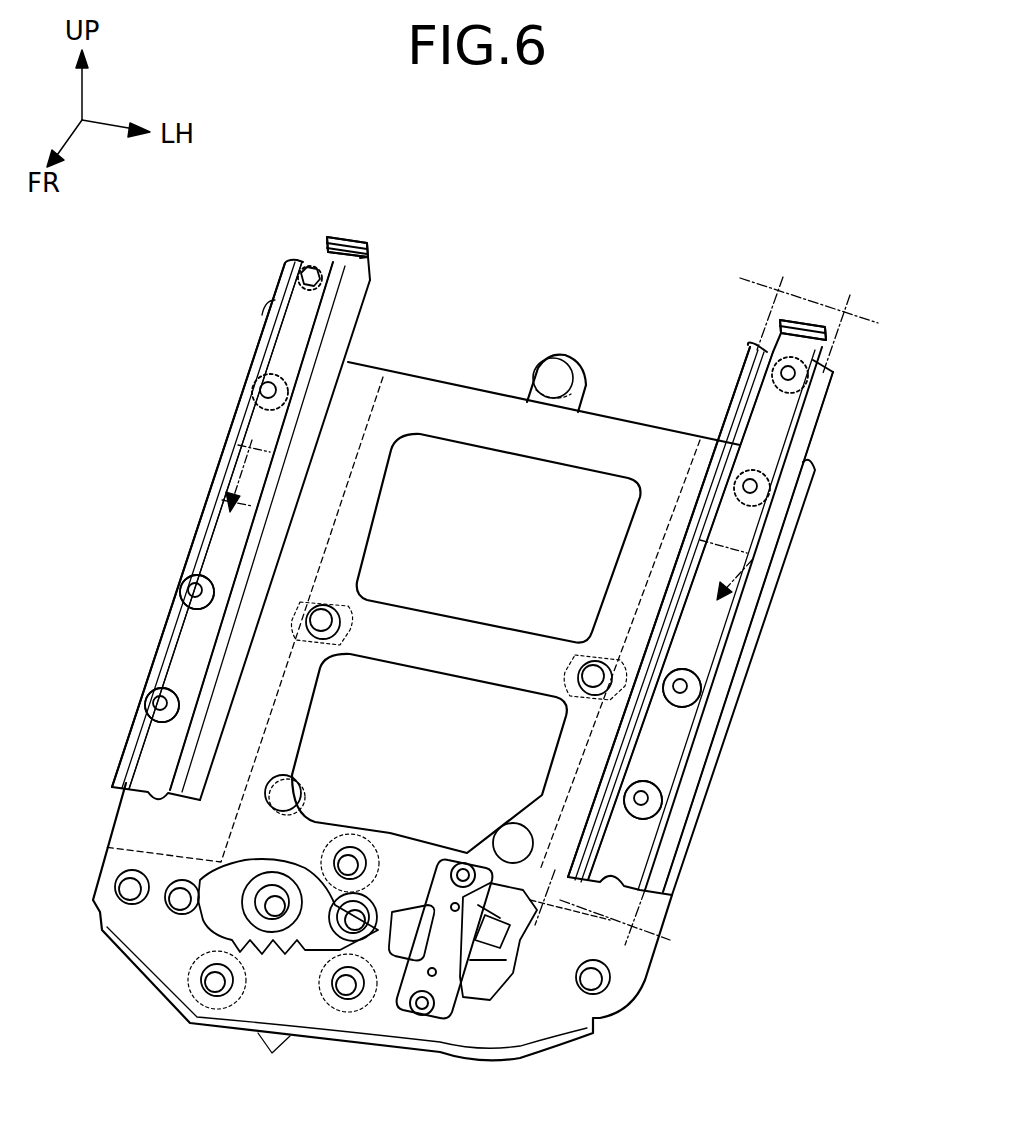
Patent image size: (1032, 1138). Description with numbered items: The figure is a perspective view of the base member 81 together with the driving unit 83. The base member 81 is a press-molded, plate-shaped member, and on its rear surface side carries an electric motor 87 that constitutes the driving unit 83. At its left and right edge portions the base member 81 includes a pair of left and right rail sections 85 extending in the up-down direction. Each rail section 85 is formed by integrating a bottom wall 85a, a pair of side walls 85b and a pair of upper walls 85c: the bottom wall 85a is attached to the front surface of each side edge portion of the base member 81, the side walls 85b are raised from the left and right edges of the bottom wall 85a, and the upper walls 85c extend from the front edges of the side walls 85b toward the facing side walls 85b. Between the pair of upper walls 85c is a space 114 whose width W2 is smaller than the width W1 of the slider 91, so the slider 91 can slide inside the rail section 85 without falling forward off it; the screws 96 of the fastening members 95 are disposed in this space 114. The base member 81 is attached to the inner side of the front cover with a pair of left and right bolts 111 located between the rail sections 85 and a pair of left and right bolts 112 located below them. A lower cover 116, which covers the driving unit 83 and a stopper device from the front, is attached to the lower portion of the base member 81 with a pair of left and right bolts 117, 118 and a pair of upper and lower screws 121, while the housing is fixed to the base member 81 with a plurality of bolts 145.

The base member 81 is at (478, 385).
The driving unit 83 is at (505, 985).
The rail section 85 is at (208, 497).
The bottom wall 85a is at (225, 532).
The side wall 85b is at (355, 312).
The upper wall 85c is at (348, 236).
The electric motor 87 is at (545, 925).
The slider 91 is at (258, 318).
The fastening member 95 is at (312, 268).
The screw 96 is at (187, 600).
The bolt 111 is at (305, 628).
The bolt 112 is at (125, 892).
The space 114 is at (237, 500).
The lower cover 116 is at (312, 912).
The bolt 117 is at (168, 912).
The bolt 118 is at (356, 935).
The screw 121 is at (423, 1010).
The bolt 145 is at (215, 985).
The width of slider W1 is at (827, 325).
The width of space W2 is at (624, 912).